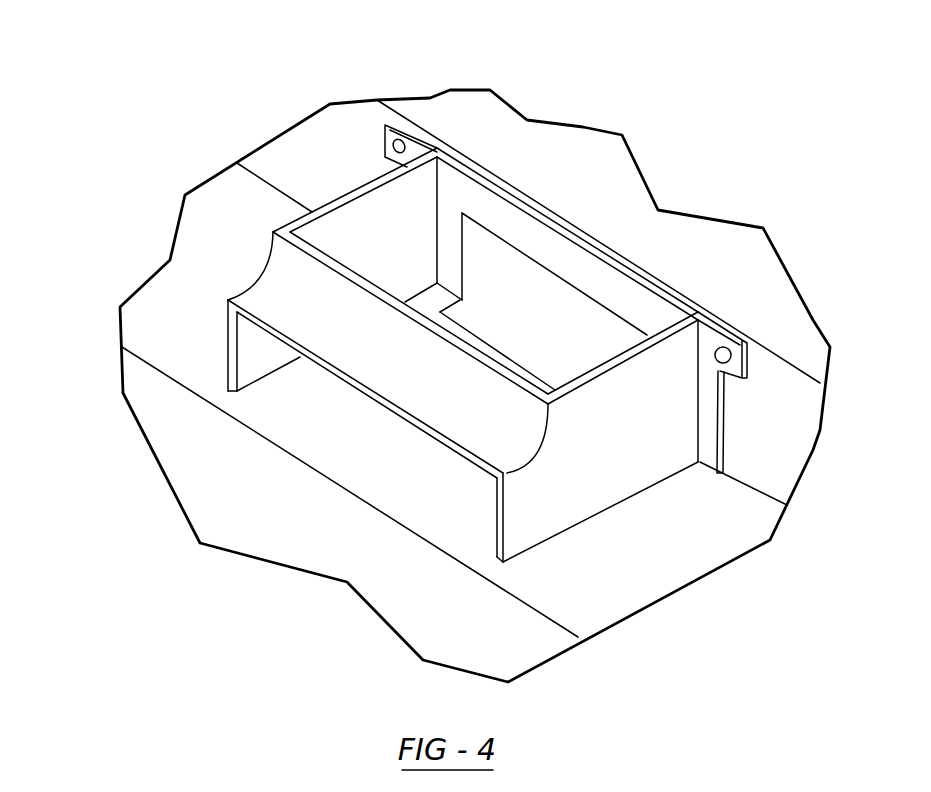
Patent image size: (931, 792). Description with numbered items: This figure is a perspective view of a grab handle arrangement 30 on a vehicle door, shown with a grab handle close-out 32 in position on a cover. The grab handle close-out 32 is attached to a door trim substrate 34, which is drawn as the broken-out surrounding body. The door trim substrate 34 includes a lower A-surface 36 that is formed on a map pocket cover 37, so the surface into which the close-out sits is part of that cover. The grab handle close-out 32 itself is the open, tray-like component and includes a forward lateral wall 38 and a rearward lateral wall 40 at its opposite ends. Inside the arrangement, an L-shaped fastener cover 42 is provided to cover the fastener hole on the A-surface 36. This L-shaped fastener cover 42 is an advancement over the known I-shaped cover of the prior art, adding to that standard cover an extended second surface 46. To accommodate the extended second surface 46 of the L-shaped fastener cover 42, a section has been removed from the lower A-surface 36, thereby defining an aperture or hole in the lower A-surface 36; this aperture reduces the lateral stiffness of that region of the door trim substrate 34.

The grab handle arrangement 30 is at (150, 240).
The grab handle close-out 32 is at (552, 503).
The door trim substrate 34 is at (755, 454).
The lower A-surface 36 is at (360, 418).
The map pocket cover 37 is at (160, 323).
The forward lateral wall 38 is at (353, 233).
The rearward lateral wall 40 is at (618, 460).
The L-shaped fastener cover 42 is at (517, 290).
The extended second surface 46 is at (483, 330).